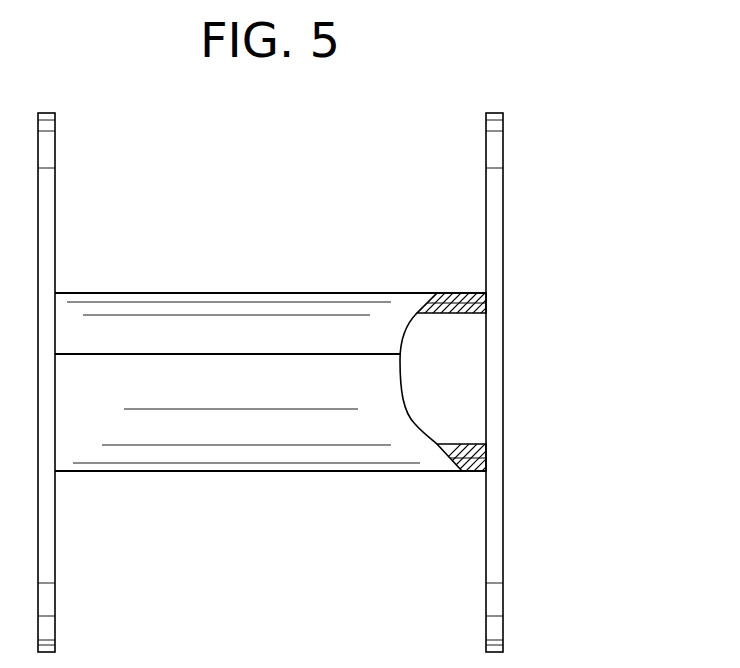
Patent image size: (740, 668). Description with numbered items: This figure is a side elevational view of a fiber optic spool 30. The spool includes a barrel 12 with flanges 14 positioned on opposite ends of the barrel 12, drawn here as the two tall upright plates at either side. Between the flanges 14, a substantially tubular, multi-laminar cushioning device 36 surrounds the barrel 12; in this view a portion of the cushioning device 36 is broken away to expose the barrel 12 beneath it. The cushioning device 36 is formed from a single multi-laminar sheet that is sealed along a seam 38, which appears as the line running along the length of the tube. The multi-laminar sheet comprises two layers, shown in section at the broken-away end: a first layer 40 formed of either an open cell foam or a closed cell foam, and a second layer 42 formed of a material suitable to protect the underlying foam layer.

The barrel 12 is at (467, 369).
The flanges 14 is at (55, 158).
The fiber optic spool 30 is at (545, 176).
The tubular, multi-laminar cushioning device 36 is at (257, 283).
The seam 38 is at (363, 348).
The first layer 40 is at (458, 453).
The second layer 42 is at (445, 297).